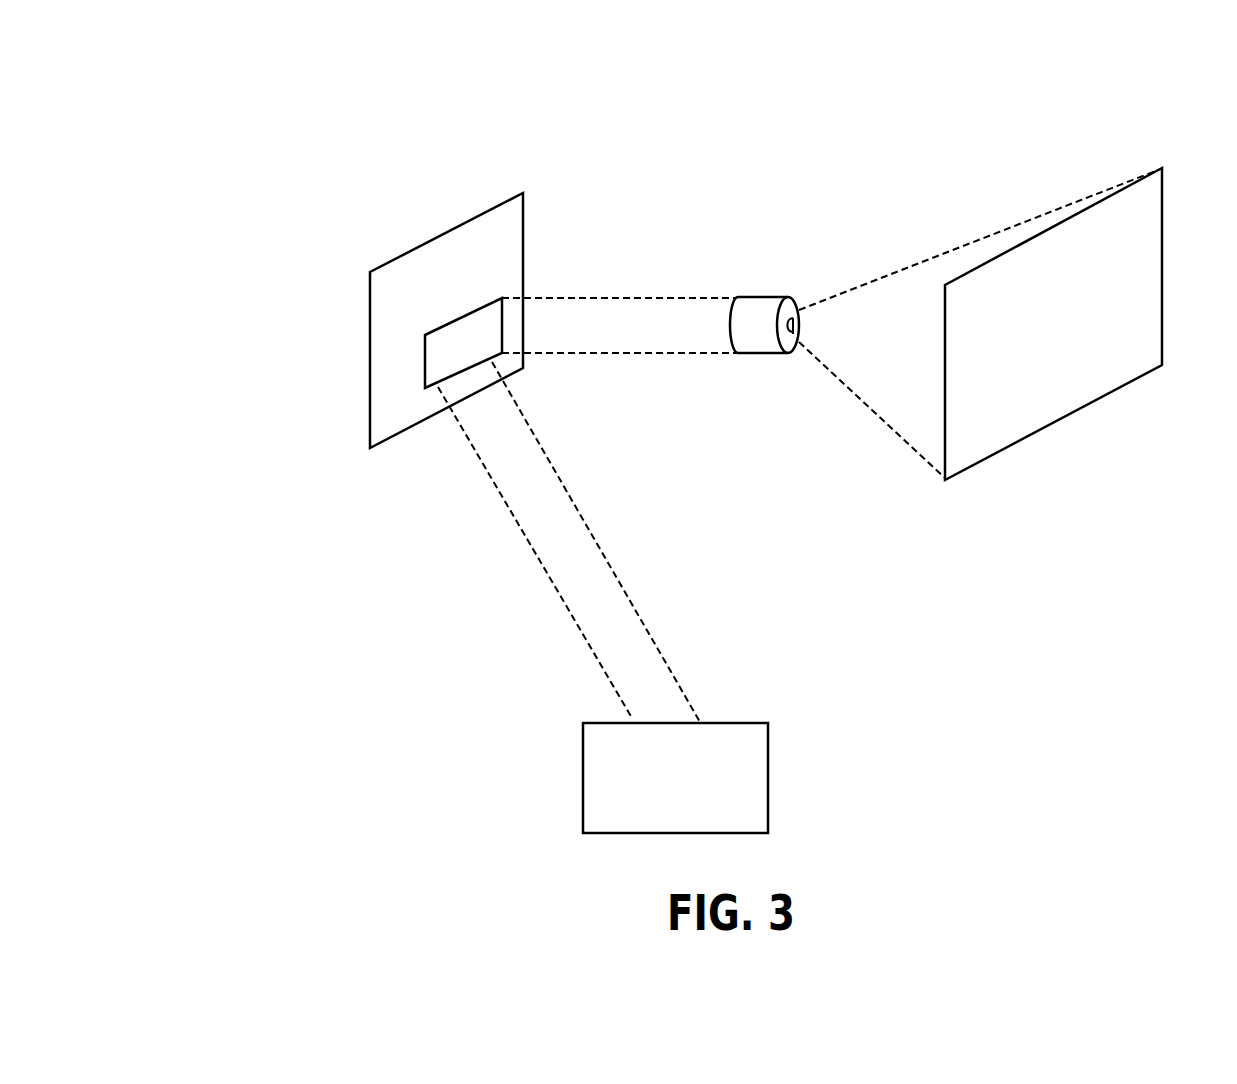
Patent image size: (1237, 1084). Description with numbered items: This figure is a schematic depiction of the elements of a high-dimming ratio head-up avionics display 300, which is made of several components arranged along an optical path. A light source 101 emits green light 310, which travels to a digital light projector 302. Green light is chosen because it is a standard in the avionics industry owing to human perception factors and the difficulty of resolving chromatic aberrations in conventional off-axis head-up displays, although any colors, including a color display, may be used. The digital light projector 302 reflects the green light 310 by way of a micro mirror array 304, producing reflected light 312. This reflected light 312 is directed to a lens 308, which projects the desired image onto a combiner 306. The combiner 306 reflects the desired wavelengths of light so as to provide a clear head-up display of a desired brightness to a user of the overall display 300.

The high-dimming ratio head-up avionics display 300 is at (296, 118).
The digital light projector 302 is at (368, 298).
The micro mirror array 304 is at (440, 362).
The combiner 306 is at (1162, 210).
The lens 308 is at (760, 295).
The green light 310 is at (603, 597).
The reflected light 312 is at (612, 322).
The light source 101 is at (768, 757).